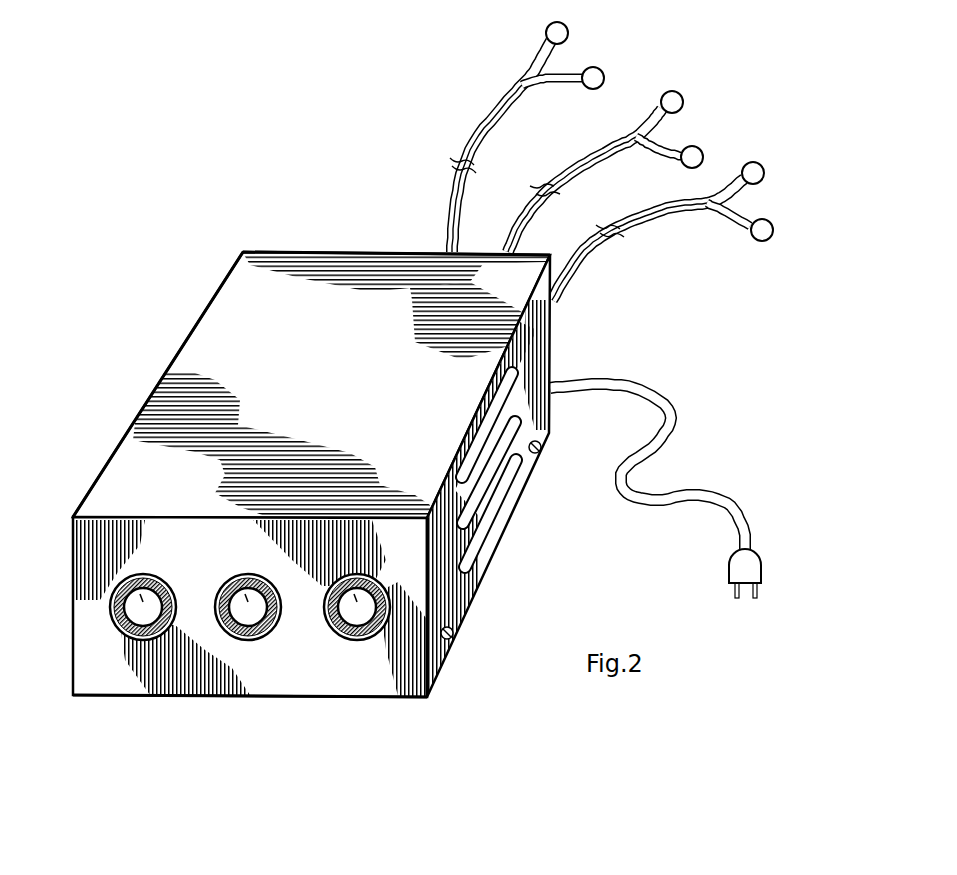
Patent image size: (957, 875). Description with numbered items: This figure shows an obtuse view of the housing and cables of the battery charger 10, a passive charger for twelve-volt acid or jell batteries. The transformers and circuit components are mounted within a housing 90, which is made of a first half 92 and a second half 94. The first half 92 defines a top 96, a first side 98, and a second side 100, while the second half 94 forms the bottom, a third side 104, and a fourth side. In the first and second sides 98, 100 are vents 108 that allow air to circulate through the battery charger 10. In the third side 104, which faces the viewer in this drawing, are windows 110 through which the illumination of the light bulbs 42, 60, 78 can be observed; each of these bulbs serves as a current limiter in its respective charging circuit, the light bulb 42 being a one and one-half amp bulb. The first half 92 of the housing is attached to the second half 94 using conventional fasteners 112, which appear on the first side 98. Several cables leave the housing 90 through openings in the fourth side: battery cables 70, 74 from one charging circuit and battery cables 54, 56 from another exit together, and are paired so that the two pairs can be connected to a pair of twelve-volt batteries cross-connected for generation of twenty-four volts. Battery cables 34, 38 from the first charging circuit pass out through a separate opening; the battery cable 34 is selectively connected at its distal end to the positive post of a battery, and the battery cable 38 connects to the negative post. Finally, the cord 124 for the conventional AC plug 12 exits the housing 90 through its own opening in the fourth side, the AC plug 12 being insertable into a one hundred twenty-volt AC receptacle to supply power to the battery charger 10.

The battery charger 10 is at (157, 263).
The AC plug 12 is at (770, 572).
The battery cable 34 is at (733, 180).
The battery cable 38 is at (747, 220).
The light bulb 42 is at (367, 580).
The battery cable 54 is at (657, 110).
The battery cable 56 is at (680, 147).
The light bulb 60 is at (236, 576).
The battery cable 70 is at (540, 53).
The battery cable 74 is at (574, 74).
The light bulb 78 is at (112, 582).
The housing 90 is at (311, 356).
The first half 92 is at (318, 248).
The second half 94 is at (290, 698).
The top 96 is at (368, 292).
The first side 98 is at (470, 598).
The second side 100 is at (90, 487).
The third side 104 is at (110, 673).
The vents 108 is at (482, 440).
The windows 110 is at (115, 622).
The fasteners 112 is at (540, 452).
The cord 124 is at (737, 505).